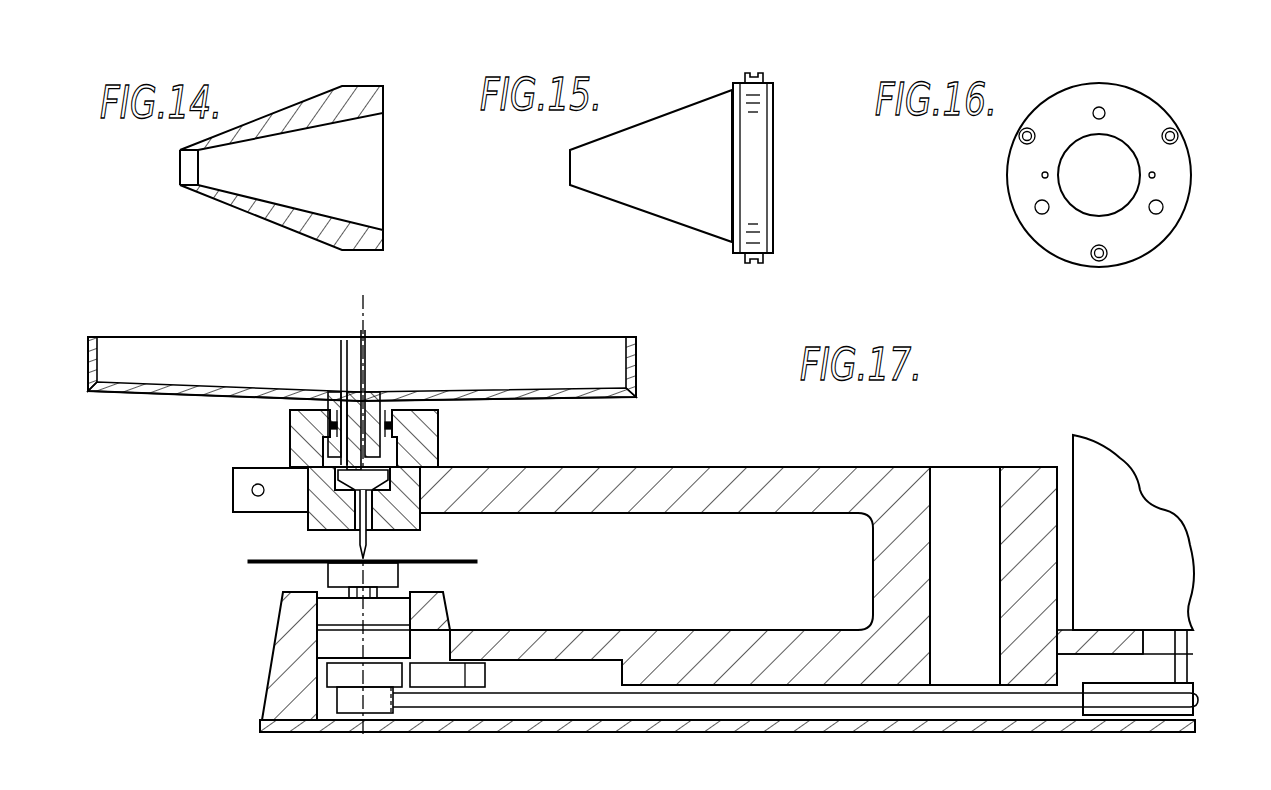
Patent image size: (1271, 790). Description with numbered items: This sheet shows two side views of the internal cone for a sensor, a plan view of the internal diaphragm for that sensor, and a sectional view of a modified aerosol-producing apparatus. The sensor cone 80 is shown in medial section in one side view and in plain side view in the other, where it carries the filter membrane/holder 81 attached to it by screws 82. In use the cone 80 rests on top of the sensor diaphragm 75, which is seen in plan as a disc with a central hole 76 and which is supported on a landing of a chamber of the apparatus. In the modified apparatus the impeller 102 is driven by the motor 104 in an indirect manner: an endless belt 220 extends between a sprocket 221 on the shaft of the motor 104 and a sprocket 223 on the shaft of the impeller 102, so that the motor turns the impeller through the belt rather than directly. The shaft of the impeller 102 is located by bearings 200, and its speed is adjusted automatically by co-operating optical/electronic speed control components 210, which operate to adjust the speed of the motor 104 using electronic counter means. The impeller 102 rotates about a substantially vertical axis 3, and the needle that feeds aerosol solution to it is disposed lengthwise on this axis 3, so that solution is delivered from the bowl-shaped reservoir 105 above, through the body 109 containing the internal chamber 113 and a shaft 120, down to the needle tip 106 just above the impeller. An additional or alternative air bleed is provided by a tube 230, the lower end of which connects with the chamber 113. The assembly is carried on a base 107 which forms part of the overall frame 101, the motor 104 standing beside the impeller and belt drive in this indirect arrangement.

In FIG. 14, the sensor cone 80 is at (247, 207).
In FIG. 15, the sensor cone 80 is at (662, 200).
In FIG. 15, the filter membrane/holder 81 is at (762, 203).
In FIG. 15, the screws 82 is at (750, 74).
In FIG. 16, the sensor diaphragm 75 is at (1030, 193).
In FIG. 16, the central hole 76 is at (1068, 153).
In FIG. 17, the vertical axis 3 is at (365, 308).
In FIG. 17, the dish 105 is at (634, 371).
In FIG. 17, the shaft 120 is at (368, 350).
In FIG. 17, the tube 230 is at (340, 350).
In FIG. 17, the housing 109 is at (438, 445).
In FIG. 17, the chamber 113 is at (343, 478).
In FIG. 17, the spindle tip 106 is at (360, 548).
In FIG. 17, the base arm 107 is at (687, 462).
In FIG. 17, the base 101 is at (992, 460).
In FIG. 17, the motor 104 is at (1160, 596).
In FIG. 17, the impeller 102 is at (446, 559).
In FIG. 17, the bearings 200 is at (333, 612).
In FIG. 17, the optical/electronic speed control components 210 is at (385, 673).
In FIG. 17, the sprocket 223 is at (353, 692).
In FIG. 17, the endless belt 220 is at (818, 697).
In FIG. 17, the sprocket 221 is at (1083, 687).